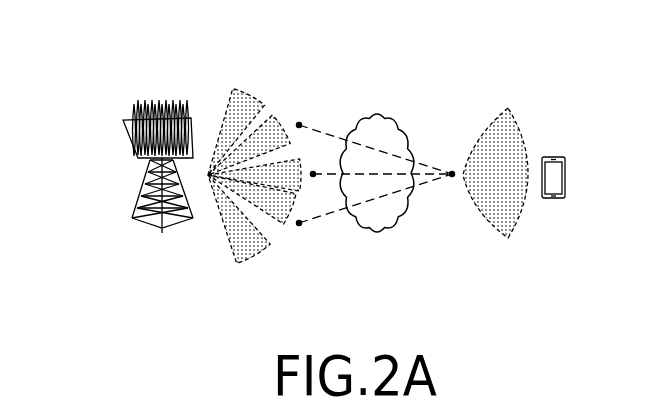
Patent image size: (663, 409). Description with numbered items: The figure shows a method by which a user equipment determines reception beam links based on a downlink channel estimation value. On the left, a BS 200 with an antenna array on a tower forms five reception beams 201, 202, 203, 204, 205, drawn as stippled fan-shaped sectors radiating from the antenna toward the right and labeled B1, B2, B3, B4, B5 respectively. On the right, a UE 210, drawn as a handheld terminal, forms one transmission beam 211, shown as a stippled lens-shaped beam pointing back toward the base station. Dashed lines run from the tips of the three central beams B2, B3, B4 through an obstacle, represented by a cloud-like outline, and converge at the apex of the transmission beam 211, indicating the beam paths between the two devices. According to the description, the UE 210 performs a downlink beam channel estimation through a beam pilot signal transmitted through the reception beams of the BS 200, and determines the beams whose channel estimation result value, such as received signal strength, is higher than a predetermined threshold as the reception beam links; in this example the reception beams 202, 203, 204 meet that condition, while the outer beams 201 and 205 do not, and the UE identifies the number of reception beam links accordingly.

The BS 200 is at (142, 187).
The reception beam 201 is at (240, 95).
The reception beam 202 is at (269, 108).
The reception beam 203 is at (285, 204).
The reception beam 204 is at (263, 240).
The reception beam 205 is at (241, 254).
The UE 210 is at (567, 177).
The transmission beam 211 is at (513, 122).
The beam B1 is at (240, 121).
The beam B2 is at (255, 134).
The beam B3 is at (267, 167).
The beam B4 is at (261, 213).
The beam B5 is at (241, 230).